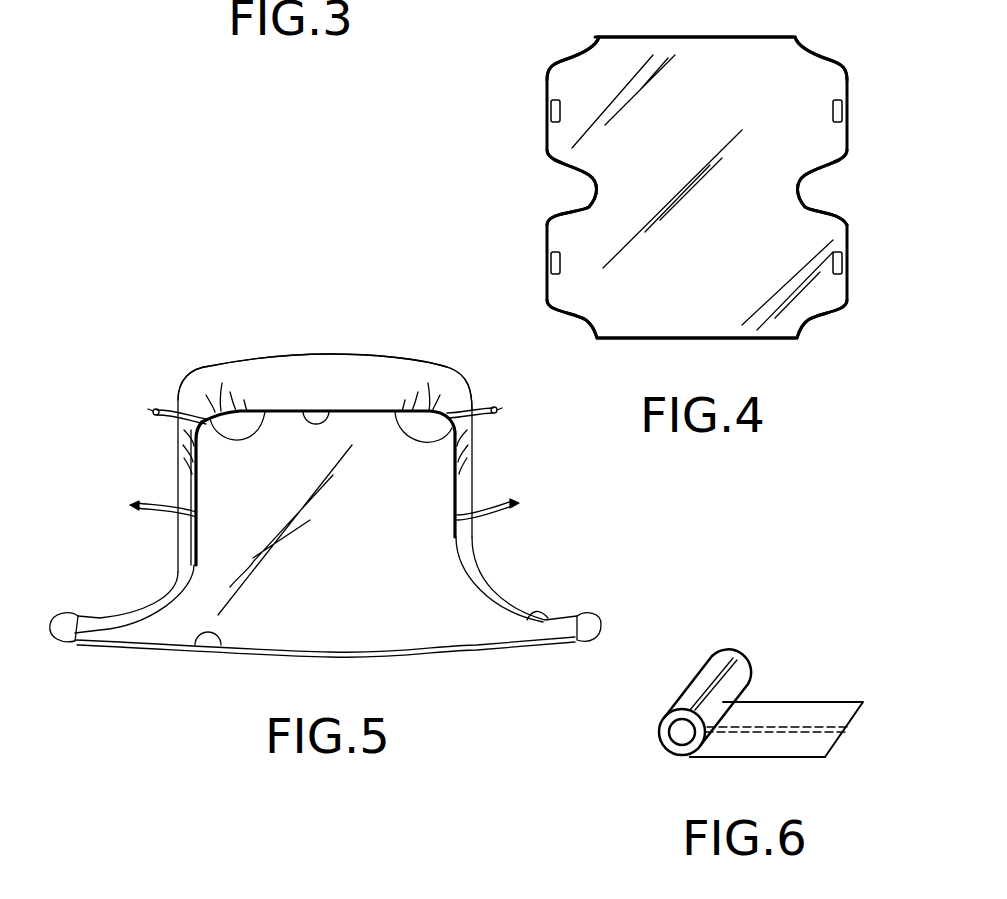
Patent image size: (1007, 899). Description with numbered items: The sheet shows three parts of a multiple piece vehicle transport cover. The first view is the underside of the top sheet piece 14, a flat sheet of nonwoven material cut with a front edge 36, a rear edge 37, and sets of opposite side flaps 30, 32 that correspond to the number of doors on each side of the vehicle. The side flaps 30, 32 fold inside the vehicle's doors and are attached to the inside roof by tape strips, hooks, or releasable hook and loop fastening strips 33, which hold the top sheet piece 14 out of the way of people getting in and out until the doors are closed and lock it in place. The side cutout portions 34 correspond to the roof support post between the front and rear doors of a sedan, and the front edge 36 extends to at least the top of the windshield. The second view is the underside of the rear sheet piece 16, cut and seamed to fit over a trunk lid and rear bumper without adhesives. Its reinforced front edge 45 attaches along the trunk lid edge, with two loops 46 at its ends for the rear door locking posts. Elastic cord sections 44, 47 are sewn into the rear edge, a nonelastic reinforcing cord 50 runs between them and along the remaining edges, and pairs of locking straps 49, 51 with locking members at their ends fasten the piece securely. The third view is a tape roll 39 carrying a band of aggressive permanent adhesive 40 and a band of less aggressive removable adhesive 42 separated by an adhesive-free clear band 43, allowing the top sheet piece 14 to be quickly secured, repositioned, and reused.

In FIG. 4, the top sheet piece 14 is at (689, 237).
In FIG. 4, the side flap 30 is at (558, 292).
In FIG. 4, the side flap 32 is at (558, 80).
In FIG. 4, the releasable hook and loop fastening strips 33 is at (553, 113).
In FIG. 4, the side cutout portions 34 is at (597, 191).
In FIG. 4, the front edge 36 is at (700, 338).
In FIG. 4, the rear edge 37 is at (708, 37).
In FIG. 5, the rear sheet piece 16 is at (316, 547).
In FIG. 5, the elastic cord section 44 is at (260, 413).
In FIG. 5, the front edge 45 is at (330, 656).
In FIG. 5, the loops 46 is at (70, 612).
In FIG. 5, the elastic cord section 47 is at (392, 412).
In FIG. 5, the pair of locking straps 49 is at (164, 505).
In FIG. 5, the nonelastic reinforcing cord 50 is at (333, 411).
In FIG. 5, the pair of locking straps 51 is at (489, 502).
In FIG. 6, the tape roll 39 is at (716, 662).
In FIG. 6, the band of aggressive permanent adhesive 40 is at (773, 708).
In FIG. 6, the band of less aggressive removable adhesive 42 is at (792, 748).
In FIG. 6, the clear band 43 is at (845, 727).